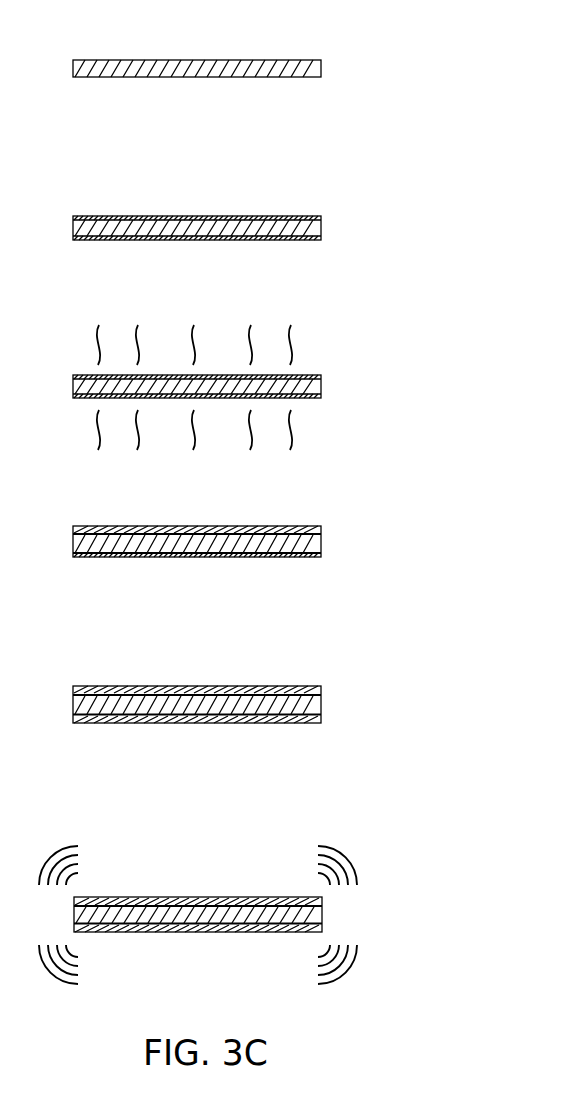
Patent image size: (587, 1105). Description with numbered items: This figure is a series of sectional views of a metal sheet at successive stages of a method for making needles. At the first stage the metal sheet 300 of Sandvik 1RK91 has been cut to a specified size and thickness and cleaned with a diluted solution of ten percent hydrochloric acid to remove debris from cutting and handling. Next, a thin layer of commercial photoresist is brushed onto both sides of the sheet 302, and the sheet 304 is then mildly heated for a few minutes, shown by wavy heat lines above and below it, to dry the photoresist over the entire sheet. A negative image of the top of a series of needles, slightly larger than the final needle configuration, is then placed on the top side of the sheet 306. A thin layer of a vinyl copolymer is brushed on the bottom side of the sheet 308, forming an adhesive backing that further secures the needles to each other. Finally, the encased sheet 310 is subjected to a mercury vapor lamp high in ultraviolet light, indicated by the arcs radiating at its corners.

The cleaned metal sheet 300 is at (214, 42).
The metal sheet coated with photoresist 302 is at (214, 202).
The heated photoresist-coated sheet 304 is at (214, 384).
The sheet with negative image placed on top side 306 is at (214, 513).
The sheet with vinyl copolymer layer on bottom side 308 is at (214, 676).
The encased sheet exposed to ultraviolet light 310 is at (198, 886).